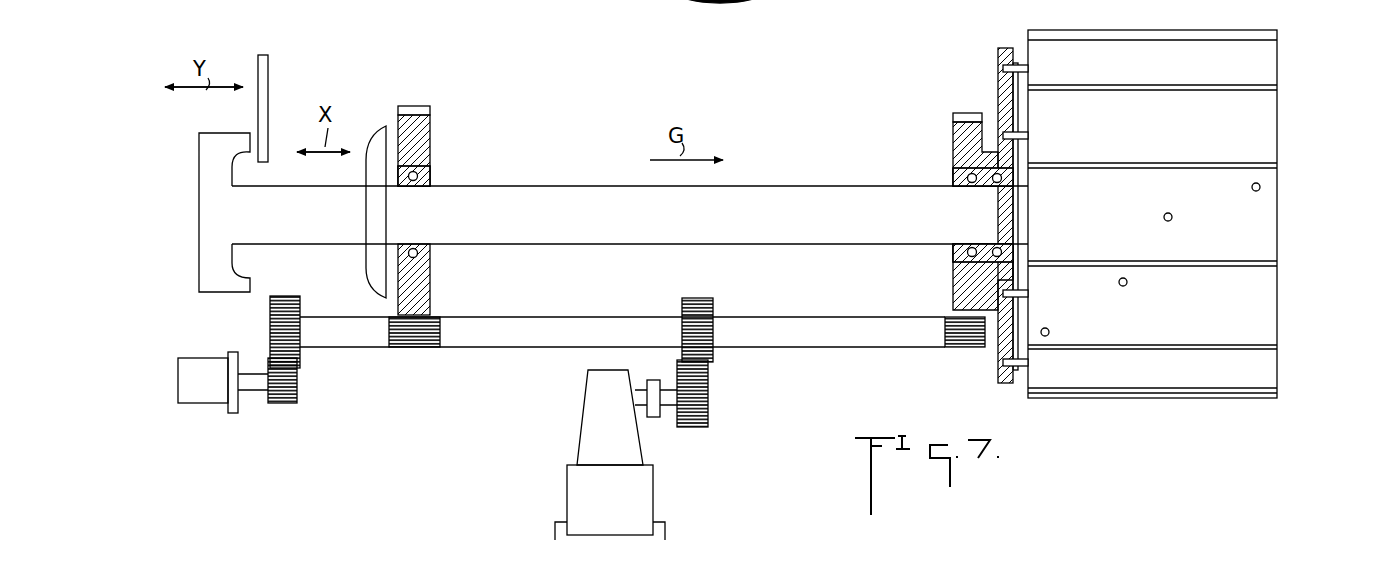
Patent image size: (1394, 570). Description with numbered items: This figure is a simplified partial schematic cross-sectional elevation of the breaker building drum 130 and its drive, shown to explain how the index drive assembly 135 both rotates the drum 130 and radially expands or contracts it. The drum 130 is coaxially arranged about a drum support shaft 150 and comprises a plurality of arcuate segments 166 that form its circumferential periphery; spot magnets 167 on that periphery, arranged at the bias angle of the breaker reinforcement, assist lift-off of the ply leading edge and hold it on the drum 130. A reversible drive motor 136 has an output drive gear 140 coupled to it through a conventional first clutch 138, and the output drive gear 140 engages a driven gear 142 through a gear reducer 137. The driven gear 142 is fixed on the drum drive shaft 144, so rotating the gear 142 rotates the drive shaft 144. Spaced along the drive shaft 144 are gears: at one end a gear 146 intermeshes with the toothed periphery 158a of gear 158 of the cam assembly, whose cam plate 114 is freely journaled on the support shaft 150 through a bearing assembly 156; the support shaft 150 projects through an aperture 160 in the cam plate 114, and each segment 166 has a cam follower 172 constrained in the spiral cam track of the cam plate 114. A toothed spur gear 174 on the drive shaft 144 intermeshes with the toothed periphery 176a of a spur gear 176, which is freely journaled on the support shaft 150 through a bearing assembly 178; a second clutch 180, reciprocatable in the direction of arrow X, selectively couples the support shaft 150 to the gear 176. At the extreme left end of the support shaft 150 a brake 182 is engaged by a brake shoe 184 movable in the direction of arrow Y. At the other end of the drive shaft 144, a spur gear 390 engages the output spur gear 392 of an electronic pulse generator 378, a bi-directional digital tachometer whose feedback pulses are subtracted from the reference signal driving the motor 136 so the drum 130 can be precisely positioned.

The cam plate 114 is at (1000, 85).
The drum 130 is at (1292, 298).
The index drive assembly 135 is at (518, 362).
The drive motor 136 is at (650, 490).
The gear reducer 137 is at (588, 441).
The first clutch 138 is at (652, 413).
The output drive gear 140 is at (710, 396).
The driven gear 142 is at (682, 295).
The drive shaft 144 is at (853, 340).
The gear 146 is at (970, 348).
The drum support shaft 150 is at (650, 240).
The bearing assembly 156 is at (955, 173).
The gear 158 is at (953, 138).
The toothed periphery 158a is at (952, 108).
The aperture 160 is at (953, 255).
The segments 166 is at (1262, 108).
The spot magnets 167 is at (1251, 195).
The cam follower 172 is at (1005, 50).
The toothed spur gear 174 is at (408, 350).
The spur gear 176 is at (417, 140).
The toothed periphery 176a is at (425, 107).
The bearing assembly 178 is at (425, 258).
The second clutch 180 is at (378, 124).
The brake 182 is at (230, 188).
The brake shoe 184 is at (262, 70).
The electronic pulse generator 378 is at (188, 395).
The spur gear 390 is at (282, 317).
The output spur gear 392 is at (282, 405).